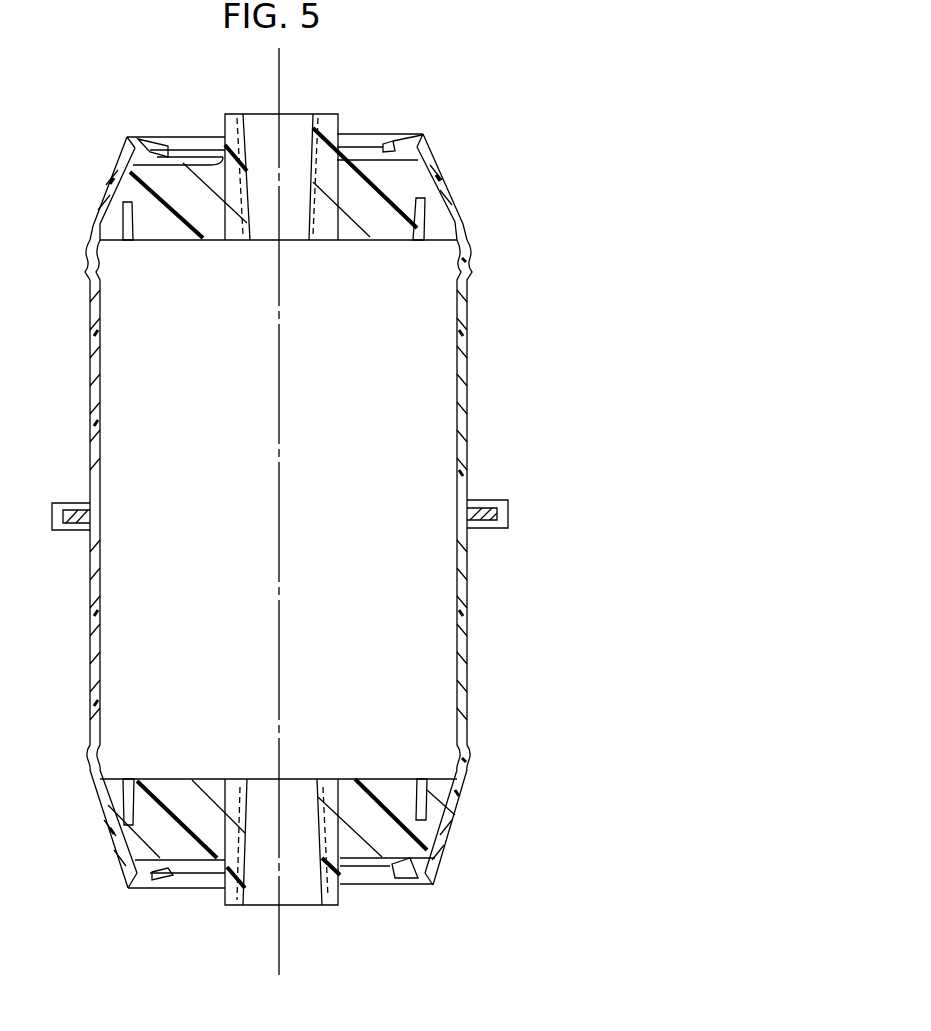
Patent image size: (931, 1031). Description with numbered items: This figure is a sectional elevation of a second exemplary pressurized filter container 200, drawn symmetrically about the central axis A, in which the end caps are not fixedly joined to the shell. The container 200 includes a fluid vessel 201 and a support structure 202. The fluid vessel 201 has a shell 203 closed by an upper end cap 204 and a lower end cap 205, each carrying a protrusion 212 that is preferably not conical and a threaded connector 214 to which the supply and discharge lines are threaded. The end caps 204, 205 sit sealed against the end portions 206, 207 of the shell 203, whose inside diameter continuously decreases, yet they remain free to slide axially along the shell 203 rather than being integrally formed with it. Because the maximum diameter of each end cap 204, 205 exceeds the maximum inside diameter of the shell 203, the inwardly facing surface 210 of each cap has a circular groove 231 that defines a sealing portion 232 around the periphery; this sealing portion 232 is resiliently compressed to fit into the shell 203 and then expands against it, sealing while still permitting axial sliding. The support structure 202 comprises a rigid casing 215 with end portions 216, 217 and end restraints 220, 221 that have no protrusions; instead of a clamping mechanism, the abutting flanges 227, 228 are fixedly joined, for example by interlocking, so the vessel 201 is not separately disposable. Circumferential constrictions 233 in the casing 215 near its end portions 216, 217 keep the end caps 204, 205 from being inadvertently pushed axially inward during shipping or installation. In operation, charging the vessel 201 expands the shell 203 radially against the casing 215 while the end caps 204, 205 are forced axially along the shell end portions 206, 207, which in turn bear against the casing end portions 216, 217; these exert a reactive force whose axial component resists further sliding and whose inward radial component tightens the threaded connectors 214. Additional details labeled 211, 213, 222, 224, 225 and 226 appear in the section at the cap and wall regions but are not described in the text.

The filter container 200 is at (568, 66).
The fluid vessel 201 is at (466, 411).
The support structure 202 is at (471, 476).
The shell 203 is at (455, 378).
The end cap 204 is at (377, 230).
The end cap 205 is at (347, 788).
The end portion of shell 206 is at (443, 197).
The end portion of shell 207 is at (448, 808).
The inwardly facing surface 210 is at (170, 249).
The lip 211 is at (152, 150).
The protrusion 212 is at (228, 132).
The hub 213 is at (263, 128).
The threaded connector 214 is at (243, 228).
The casing 215 is at (89, 445).
The end portion of casing 216 is at (98, 188).
The end portion of casing 217 is at (113, 843).
The end restraint 220 is at (393, 140).
The end restraint 221 is at (402, 880).
The seal ring 222 is at (366, 162).
The right cover flange 224 is at (370, 143).
The upper wall portion 225 is at (89, 340).
The lower wall portion 226 is at (92, 680).
The abutting flange 227 is at (70, 504).
The abutting flange 228 is at (73, 524).
The circular groove 231 is at (417, 225).
The sealing portion 232 is at (113, 232).
The circumferential constriction 233 is at (463, 262).
The axis A is at (280, 590).